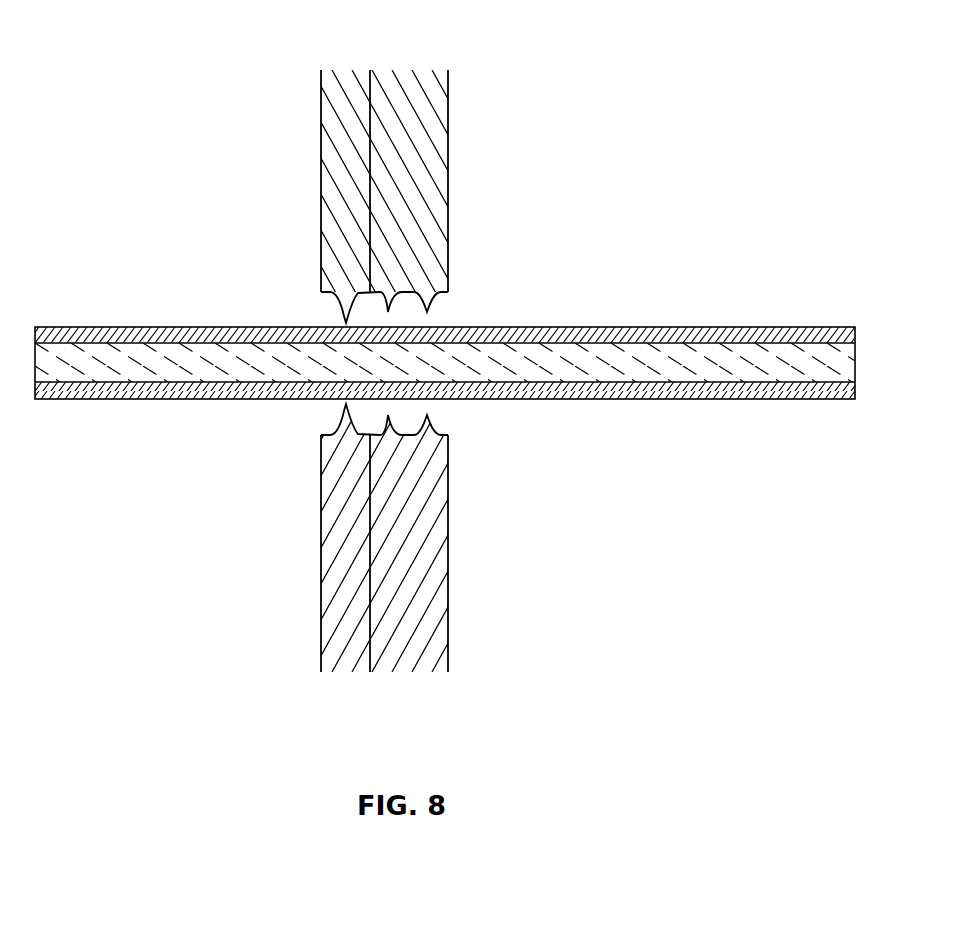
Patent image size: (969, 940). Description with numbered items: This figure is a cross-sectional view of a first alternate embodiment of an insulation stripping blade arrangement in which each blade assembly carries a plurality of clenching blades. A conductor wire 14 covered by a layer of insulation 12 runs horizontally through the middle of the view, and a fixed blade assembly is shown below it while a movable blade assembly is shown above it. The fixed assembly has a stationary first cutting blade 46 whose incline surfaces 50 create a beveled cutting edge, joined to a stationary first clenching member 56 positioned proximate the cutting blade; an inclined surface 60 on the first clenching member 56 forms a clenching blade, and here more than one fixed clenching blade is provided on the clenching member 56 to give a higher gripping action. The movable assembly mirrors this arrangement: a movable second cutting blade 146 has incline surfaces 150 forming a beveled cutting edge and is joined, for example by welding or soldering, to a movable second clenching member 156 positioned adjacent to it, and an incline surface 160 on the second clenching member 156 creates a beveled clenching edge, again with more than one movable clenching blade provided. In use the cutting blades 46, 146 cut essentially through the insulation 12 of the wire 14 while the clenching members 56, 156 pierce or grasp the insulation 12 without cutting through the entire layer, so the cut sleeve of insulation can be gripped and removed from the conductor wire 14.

The insulation 12 is at (658, 400).
The conductor wire 14 is at (630, 358).
The first cutting blade 46 is at (340, 517).
The incline surfaces 50 is at (338, 425).
The first clenching member 56 is at (435, 516).
The inclined surface 60 is at (393, 432).
The second cutting blade 146 is at (340, 164).
The incline surfaces 150 is at (343, 317).
The second clenching member 156 is at (434, 167).
The incline surface 160 is at (390, 312).